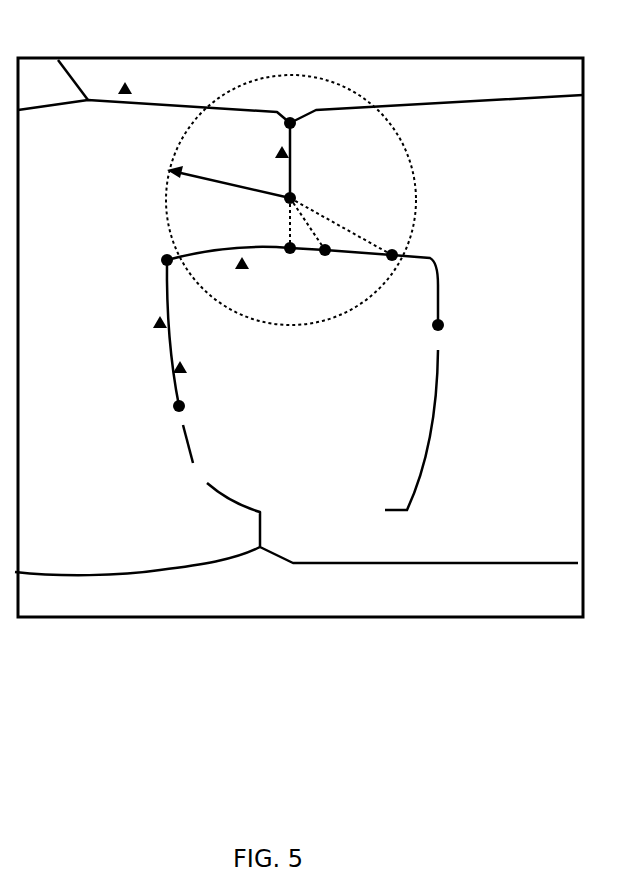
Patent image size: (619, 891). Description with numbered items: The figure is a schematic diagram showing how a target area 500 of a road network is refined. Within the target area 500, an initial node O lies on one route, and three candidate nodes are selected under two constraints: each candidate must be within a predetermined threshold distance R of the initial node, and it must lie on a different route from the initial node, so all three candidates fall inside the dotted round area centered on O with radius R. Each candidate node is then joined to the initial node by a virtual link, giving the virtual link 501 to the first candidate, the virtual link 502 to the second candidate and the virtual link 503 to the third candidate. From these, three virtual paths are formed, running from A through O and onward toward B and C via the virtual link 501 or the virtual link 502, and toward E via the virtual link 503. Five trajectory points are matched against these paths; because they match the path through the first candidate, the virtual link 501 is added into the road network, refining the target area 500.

The target area 500 is at (113, 43).
The virtual link 501 is at (287, 222).
The virtual link 502 is at (313, 227).
The virtual link 503 is at (368, 240).